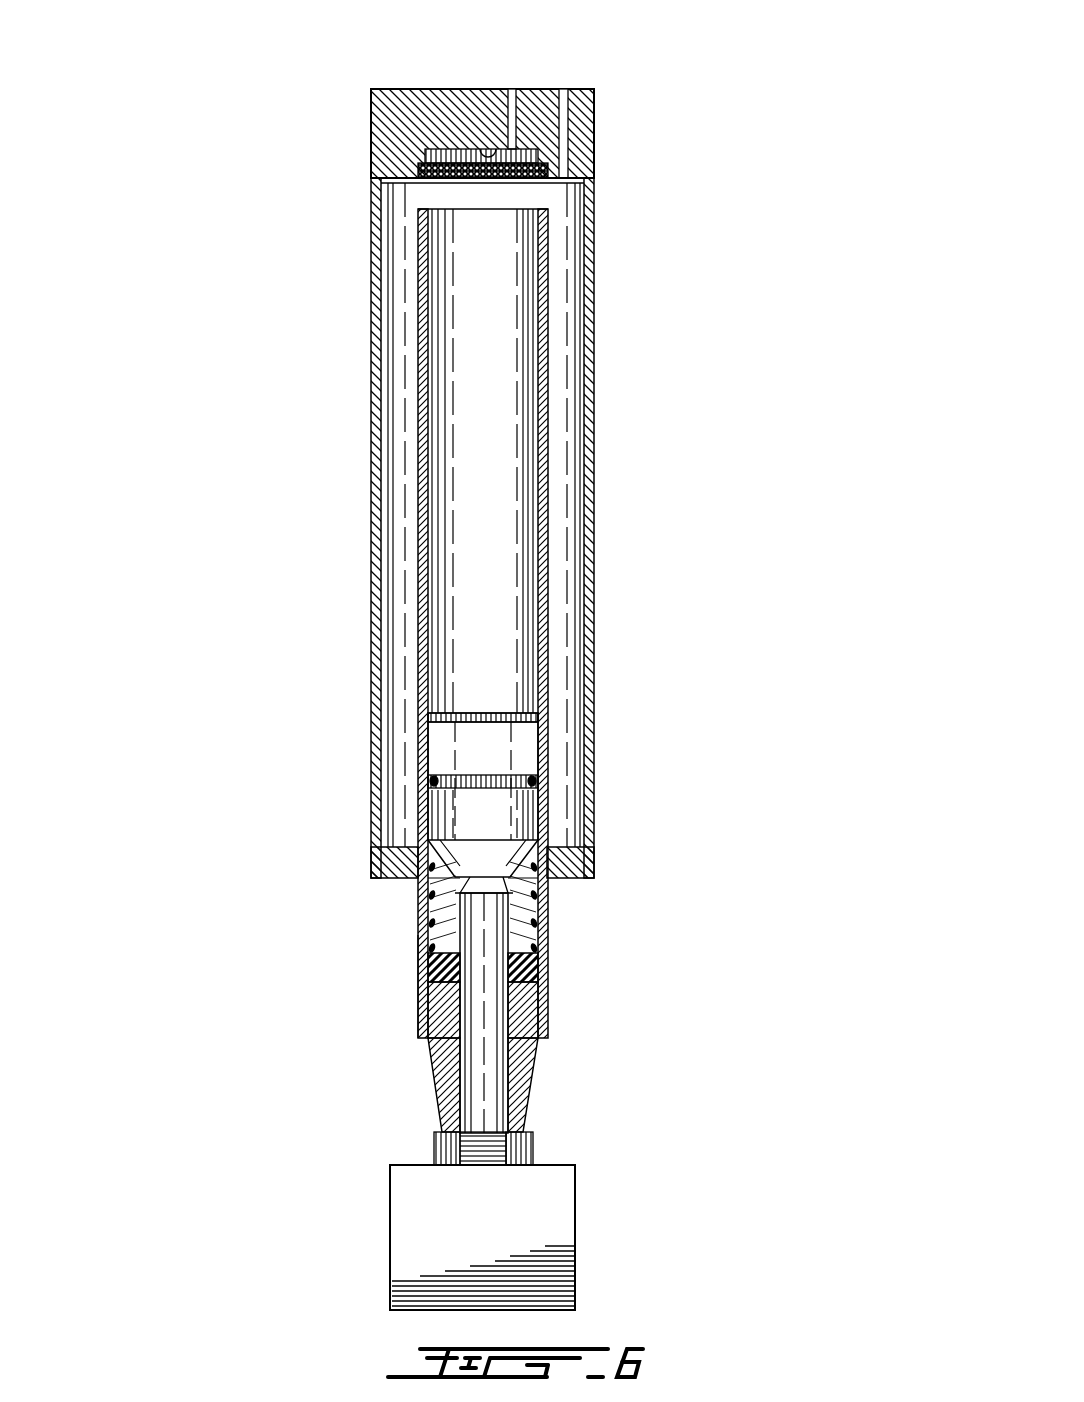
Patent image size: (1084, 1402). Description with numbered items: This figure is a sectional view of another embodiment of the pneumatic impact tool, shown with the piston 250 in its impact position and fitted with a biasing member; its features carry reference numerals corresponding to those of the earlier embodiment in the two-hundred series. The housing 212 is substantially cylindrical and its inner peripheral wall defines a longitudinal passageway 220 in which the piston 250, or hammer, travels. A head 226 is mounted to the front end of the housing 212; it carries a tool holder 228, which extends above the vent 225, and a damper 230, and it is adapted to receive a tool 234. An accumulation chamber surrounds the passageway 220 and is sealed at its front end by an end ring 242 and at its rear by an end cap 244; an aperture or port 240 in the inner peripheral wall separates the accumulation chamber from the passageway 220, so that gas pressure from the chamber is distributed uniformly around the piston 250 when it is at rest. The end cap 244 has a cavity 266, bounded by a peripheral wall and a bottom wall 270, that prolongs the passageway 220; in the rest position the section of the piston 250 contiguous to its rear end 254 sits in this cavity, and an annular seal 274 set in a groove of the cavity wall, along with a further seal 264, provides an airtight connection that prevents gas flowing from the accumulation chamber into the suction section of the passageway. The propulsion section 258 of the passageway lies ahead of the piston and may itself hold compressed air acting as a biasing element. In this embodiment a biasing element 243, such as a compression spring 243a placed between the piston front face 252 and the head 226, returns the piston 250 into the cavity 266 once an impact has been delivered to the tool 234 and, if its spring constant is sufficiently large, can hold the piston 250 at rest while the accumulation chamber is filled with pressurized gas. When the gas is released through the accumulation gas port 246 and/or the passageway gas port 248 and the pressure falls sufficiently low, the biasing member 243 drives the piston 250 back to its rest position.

The housing 212 is at (596, 768).
The longitudinal passageway 220 is at (505, 688).
The vent 225 is at (432, 905).
The head 226 is at (556, 1066).
The tool holder 228 is at (490, 936).
The damper 230 is at (540, 966).
The tool 234 is at (420, 1223).
The aperture 240 is at (545, 190).
The end ring 242 is at (590, 850).
The biasing element 243 is at (418, 936).
The compression spring 243a is at (423, 976).
The end cap 244 is at (595, 128).
The accumulation gas port 246 is at (563, 95).
The passageway gas port 248 is at (511, 100).
The piston 250 is at (470, 746).
The piston front face 252 is at (432, 868).
The rear end of the piston 254 is at (518, 720).
The propulsion section 258 is at (490, 375).
The seal 264 is at (430, 781).
The cavity 266 is at (430, 160).
The bottom wall 270 is at (488, 152).
The seal 274 is at (560, 176).